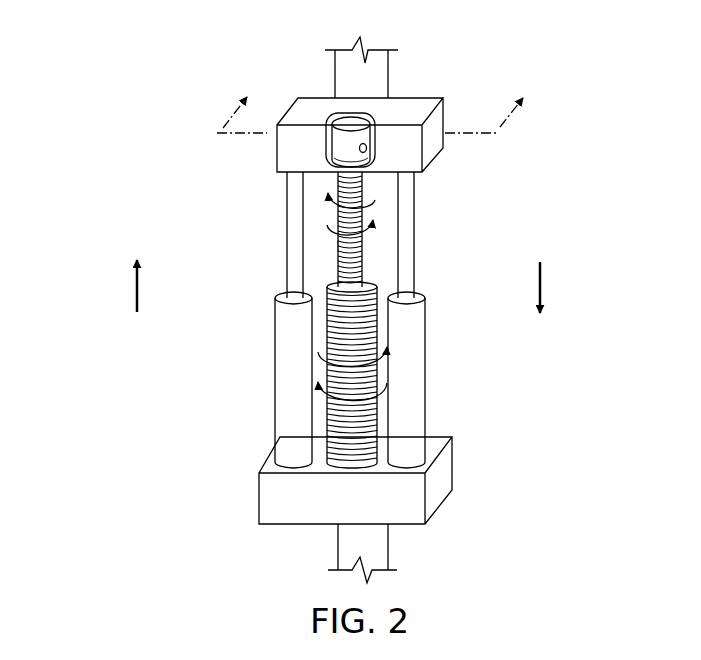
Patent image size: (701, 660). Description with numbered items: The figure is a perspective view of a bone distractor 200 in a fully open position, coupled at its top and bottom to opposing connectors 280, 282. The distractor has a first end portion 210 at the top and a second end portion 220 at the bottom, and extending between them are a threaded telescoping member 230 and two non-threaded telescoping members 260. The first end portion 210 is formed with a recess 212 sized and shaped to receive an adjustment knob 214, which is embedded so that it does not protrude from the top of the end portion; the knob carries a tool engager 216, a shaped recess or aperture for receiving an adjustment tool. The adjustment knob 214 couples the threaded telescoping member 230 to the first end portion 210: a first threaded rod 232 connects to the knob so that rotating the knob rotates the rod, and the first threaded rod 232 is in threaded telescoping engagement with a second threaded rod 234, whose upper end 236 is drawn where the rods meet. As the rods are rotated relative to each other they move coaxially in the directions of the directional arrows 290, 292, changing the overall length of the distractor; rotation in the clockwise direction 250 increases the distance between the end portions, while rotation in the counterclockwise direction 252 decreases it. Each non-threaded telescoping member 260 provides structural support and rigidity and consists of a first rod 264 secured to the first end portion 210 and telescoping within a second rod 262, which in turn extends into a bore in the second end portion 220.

The bone distractor 200 is at (543, 148).
The first end portion 210 is at (408, 97).
The recess 212 is at (345, 118).
The adjustment knob 214 is at (343, 152).
The tool engager 216 is at (366, 149).
The second end portion 220 is at (257, 526).
The threaded telescoping member 230 is at (367, 254).
The first threaded rod 232 is at (340, 250).
The second threaded rod 234 is at (325, 410).
The nut top end 236 is at (330, 284).
The clockwise direction 250 is at (376, 200).
The counterclockwise direction 252 is at (375, 220).
The non-threaded telescoping member 260 is at (369, 375).
The second rod 262 is at (283, 437).
The first rod 264 is at (292, 264).
The connector 280 is at (343, 72).
The connector 282 is at (343, 543).
The directional arrow 290 is at (542, 282).
The directional arrow 292 is at (136, 289).